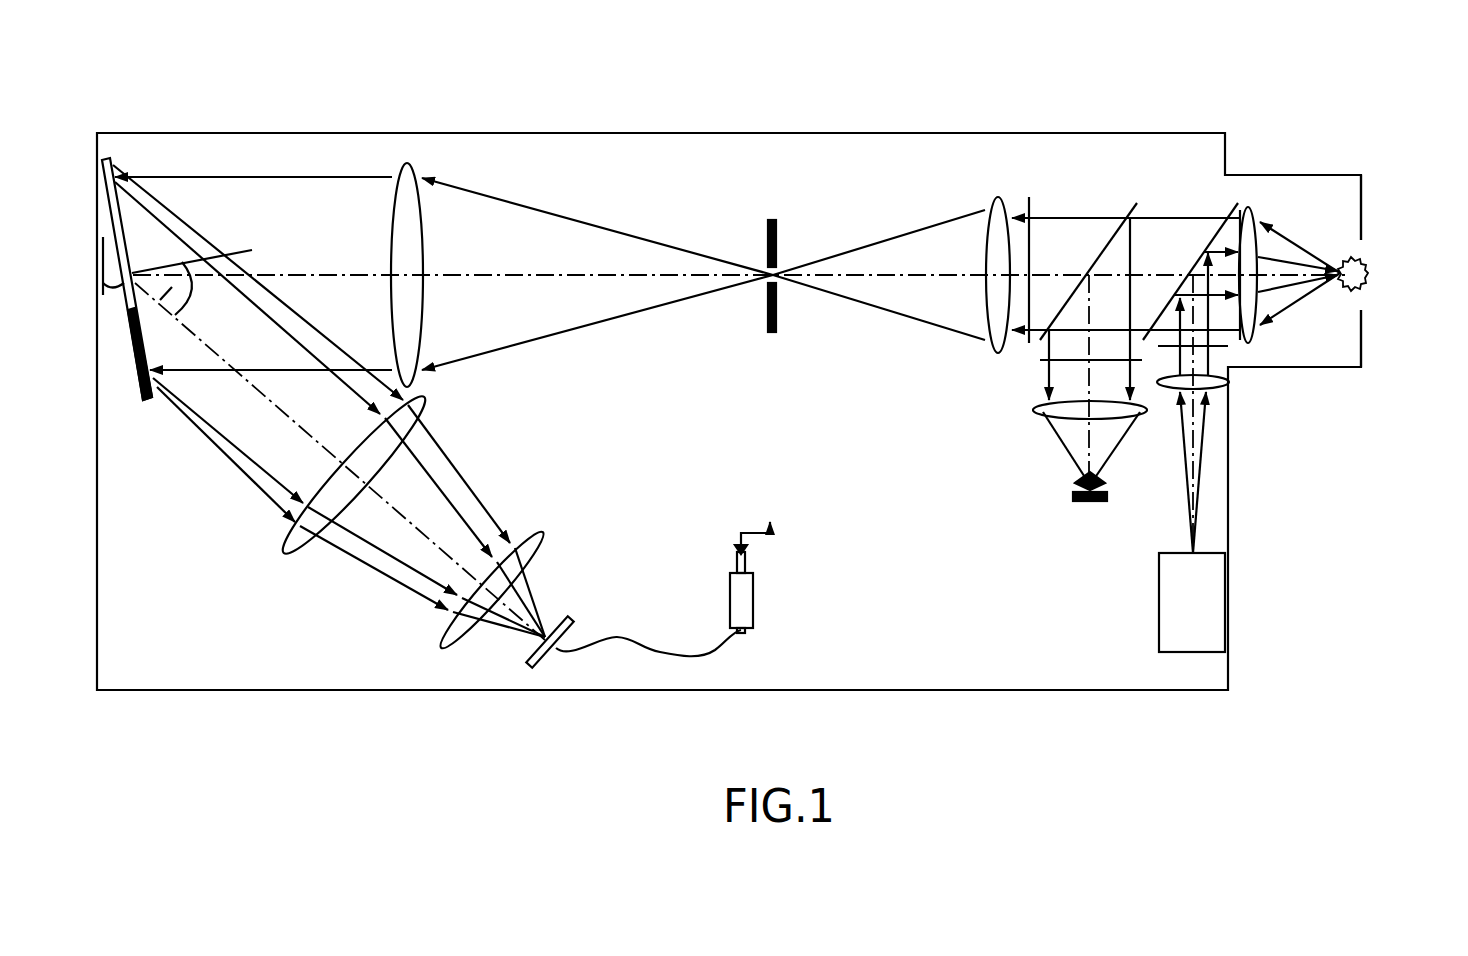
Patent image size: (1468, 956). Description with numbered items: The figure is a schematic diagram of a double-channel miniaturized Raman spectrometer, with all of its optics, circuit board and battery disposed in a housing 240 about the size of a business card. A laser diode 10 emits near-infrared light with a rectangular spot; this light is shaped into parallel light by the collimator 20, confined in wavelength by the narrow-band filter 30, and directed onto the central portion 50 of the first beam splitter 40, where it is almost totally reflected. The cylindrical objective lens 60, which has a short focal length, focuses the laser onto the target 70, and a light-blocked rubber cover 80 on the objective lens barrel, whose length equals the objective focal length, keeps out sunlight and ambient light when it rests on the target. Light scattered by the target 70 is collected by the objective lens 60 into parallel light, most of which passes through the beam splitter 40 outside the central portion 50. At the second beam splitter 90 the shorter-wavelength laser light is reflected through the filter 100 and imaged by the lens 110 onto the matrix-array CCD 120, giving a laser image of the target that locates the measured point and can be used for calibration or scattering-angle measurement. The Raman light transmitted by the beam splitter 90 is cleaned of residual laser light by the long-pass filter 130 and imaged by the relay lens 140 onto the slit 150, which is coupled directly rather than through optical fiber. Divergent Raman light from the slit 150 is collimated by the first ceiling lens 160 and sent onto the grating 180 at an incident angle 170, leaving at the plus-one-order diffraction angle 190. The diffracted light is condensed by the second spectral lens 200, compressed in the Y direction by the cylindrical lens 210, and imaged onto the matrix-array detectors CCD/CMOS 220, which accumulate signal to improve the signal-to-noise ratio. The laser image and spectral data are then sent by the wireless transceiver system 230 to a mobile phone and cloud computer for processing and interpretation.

The laser diode 10 is at (1218, 607).
The collimator 20 is at (1232, 395).
The narrow-band filter 30 is at (1218, 352).
The first beam splitter 40 is at (1235, 208).
The central portion 50 is at (1192, 267).
The cylindrical objective lens 60 is at (1262, 205).
The target 70 is at (1378, 287).
The light-blocked rubber cover 80 is at (1365, 205).
The second beam splitter 90 is at (1125, 200).
The filter 100 is at (1027, 362).
The lens 110 is at (1030, 415).
The matrix-array CCD 120 is at (1075, 508).
The long-pass filter 130 is at (1027, 197).
The relay lens 140 is at (985, 208).
The slit 150 is at (770, 220).
The first ceiling lens 160 is at (410, 160).
The incident angle 170 is at (112, 240).
The grating 180 is at (110, 158).
The +1 level diffraction angle 190 is at (172, 287).
The second spectral lens 200 is at (272, 550).
The cylindrical lens 210 is at (560, 515).
The matrix-array detectors CCD/CMOS 220 is at (578, 610).
The wireless transceiver system 230 is at (760, 602).
The housing 240 is at (1237, 662).